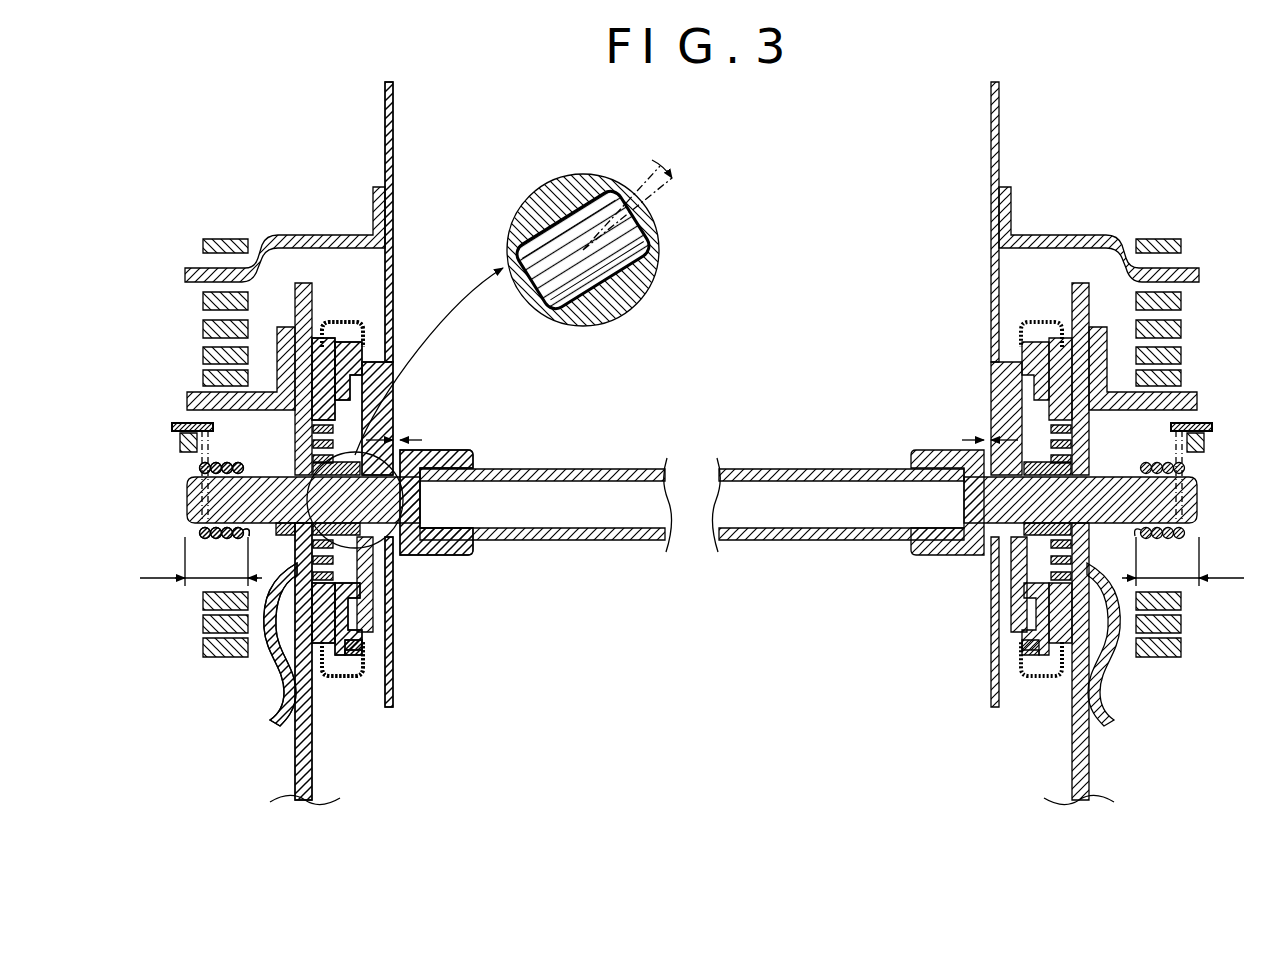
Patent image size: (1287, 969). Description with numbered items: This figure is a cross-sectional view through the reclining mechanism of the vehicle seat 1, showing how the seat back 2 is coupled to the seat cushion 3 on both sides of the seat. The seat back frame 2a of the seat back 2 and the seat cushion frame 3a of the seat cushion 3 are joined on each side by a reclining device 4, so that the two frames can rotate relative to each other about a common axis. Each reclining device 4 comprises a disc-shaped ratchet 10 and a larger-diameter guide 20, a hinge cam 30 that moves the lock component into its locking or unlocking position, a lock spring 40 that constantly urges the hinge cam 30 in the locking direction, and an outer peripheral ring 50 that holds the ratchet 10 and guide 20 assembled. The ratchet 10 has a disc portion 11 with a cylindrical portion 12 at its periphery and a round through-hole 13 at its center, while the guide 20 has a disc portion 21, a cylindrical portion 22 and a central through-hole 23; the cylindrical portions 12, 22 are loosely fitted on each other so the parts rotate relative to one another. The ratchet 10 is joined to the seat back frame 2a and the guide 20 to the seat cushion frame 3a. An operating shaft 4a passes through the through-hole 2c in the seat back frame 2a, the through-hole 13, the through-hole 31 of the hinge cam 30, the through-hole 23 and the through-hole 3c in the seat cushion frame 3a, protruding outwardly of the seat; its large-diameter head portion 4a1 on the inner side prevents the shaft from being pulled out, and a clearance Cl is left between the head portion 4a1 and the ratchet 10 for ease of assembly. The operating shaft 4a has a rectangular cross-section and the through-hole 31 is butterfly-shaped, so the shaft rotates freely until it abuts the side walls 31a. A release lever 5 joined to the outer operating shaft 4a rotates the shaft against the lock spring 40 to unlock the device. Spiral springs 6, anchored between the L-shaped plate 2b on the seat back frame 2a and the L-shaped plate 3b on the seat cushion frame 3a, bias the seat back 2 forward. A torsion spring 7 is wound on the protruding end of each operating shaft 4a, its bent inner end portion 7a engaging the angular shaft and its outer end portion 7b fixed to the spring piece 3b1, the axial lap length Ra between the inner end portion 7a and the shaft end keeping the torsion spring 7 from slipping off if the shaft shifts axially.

The vehicle seat 1 is at (262, 98).
The seat back 2 is at (378, 135).
The seat back frame 2a is at (688, 394).
The L-shaped plate 2b is at (633, 229).
The through-hole 2c is at (677, 418).
The seat cushion 3 is at (237, 772).
The seat cushion frame 3a is at (672, 664).
The L-shaped plate 3b is at (692, 368).
The spring piece 3b1 is at (693, 475).
The through-hole 3c is at (692, 379).
The reclining device 4 is at (667, 465).
The operating shaft 4a is at (689, 523).
The head portion 4a1 is at (677, 489).
The release lever 5 is at (280, 690).
The spiral spring 6 is at (691, 448).
The torsion spring 7 is at (694, 508).
The inner end portion 7a is at (693, 528).
The outer end portion 7b is at (689, 421).
The ratchet 10 is at (675, 413).
The disc portion 11 is at (681, 590).
The cylindrical portion 12 is at (689, 668).
The through-hole 13 is at (679, 523).
The guide 20 is at (692, 644).
The disc portion 21 is at (679, 505).
The cylindrical portion 22 is at (691, 530).
The through-hole 23 is at (690, 555).
The hinge cam 30 is at (525, 172).
The through-hole 31 is at (558, 155).
The side walls 31a is at (600, 195).
The lock spring 40 is at (683, 490).
The outer peripheral ring 50 is at (688, 696).
The clearance Cl is at (648, 422).
The axial lap length Ra is at (691, 561).